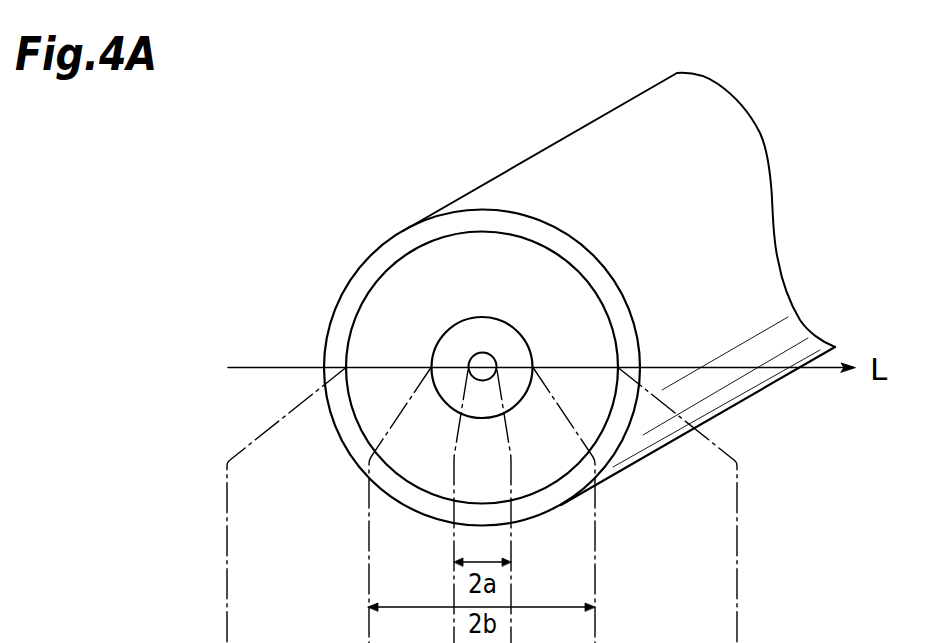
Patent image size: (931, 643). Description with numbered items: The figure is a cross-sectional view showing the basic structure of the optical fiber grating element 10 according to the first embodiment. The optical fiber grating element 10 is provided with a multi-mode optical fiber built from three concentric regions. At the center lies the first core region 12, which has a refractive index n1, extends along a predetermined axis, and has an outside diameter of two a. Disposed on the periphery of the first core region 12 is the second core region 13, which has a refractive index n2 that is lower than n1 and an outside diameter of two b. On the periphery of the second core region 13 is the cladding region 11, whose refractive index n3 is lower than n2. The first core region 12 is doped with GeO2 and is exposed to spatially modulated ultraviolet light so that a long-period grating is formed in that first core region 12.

The optical fiber grating element 10 is at (402, 257).
The cladding region 11 is at (372, 404).
The first core region 12 is at (480, 353).
The second core region 13 is at (447, 348).